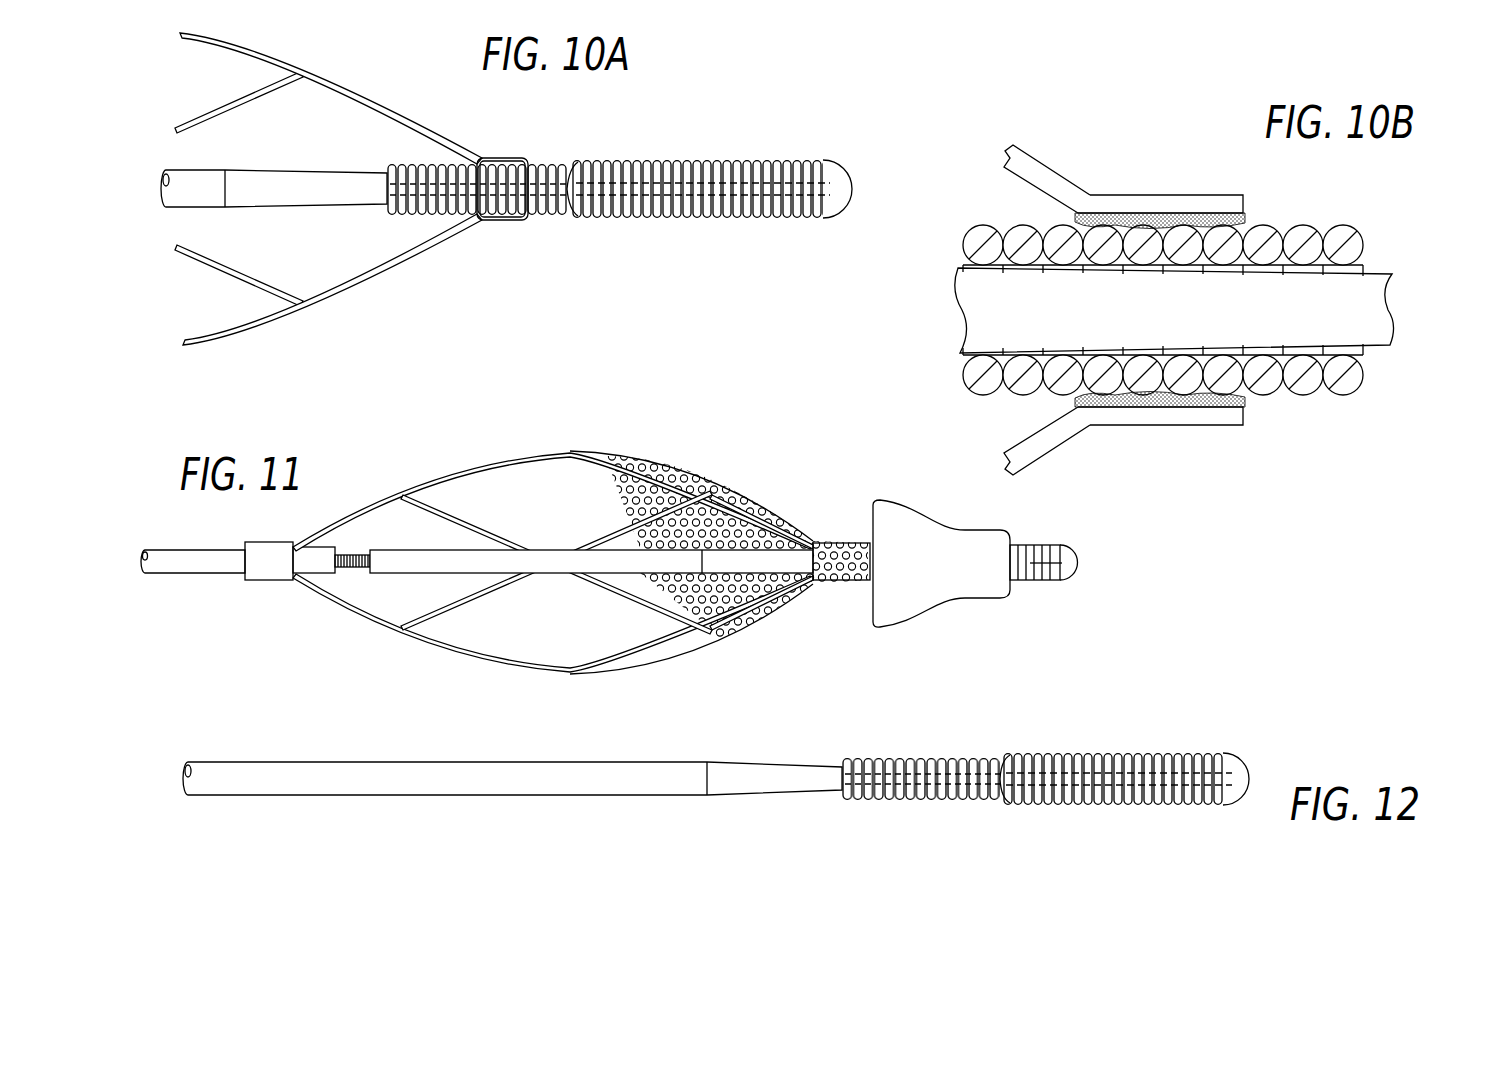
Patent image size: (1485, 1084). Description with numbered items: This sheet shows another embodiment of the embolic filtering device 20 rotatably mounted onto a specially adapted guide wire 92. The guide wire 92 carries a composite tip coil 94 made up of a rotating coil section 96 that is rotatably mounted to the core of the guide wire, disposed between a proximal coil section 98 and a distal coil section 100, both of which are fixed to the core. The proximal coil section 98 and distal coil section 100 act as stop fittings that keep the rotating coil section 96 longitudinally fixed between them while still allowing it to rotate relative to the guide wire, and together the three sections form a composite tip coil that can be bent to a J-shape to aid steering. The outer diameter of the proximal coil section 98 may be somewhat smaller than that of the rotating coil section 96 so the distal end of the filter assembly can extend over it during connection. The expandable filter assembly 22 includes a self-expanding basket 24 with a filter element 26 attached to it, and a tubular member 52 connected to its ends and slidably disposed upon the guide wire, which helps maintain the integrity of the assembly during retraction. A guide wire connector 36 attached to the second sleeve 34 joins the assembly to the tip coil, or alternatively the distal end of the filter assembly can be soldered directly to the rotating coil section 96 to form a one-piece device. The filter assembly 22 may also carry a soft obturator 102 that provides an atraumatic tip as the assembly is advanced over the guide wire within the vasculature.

In FIG. 10A, the embolic filtering device 20 is at (380, 86).
In FIG. 11, the expandable filter assembly 22 is at (609, 528).
In FIG. 10A, the self-expanding basket 24 is at (347, 294).
In FIG. 10B, the self-expanding basket 24 is at (1042, 173).
In FIG. 11, the self-expanding basket 24 is at (476, 466).
In FIG. 11, the filter element 26 is at (791, 520).
In FIG. 10B, the second sleeve 34 is at (1158, 204).
In FIG. 10A, the guide wire connector 36 is at (507, 160).
In FIG. 11, the tubular member 52 is at (390, 563).
In FIG. 10A, the guide wire 92 is at (190, 193).
In FIG. 10B, the guide wire 92 is at (1356, 320).
In FIG. 12, the guide wire 92 is at (430, 786).
In FIG. 10A, the composite tip coil 94 is at (730, 128).
In FIG. 12, the composite tip coil 94 is at (1192, 726).
In FIG. 10A, the rotating coil section 96 is at (556, 216).
In FIG. 10B, the rotating coil section 96 is at (1300, 224).
In FIG. 12, the rotating coil section 96 is at (943, 758).
In FIG. 10A, the proximal coil section 98 is at (430, 167).
In FIG. 12, the proximal coil section 98 is at (873, 798).
In FIG. 10A, the distal coil section 100 is at (722, 218).
In FIG. 12, the distal coil section 100 is at (1107, 804).
In FIG. 11, the obturator 102 is at (947, 578).